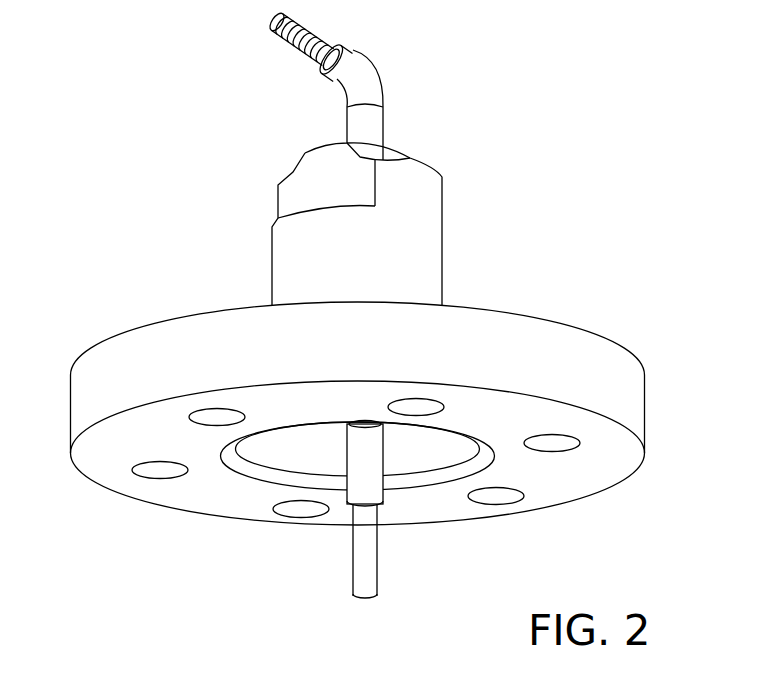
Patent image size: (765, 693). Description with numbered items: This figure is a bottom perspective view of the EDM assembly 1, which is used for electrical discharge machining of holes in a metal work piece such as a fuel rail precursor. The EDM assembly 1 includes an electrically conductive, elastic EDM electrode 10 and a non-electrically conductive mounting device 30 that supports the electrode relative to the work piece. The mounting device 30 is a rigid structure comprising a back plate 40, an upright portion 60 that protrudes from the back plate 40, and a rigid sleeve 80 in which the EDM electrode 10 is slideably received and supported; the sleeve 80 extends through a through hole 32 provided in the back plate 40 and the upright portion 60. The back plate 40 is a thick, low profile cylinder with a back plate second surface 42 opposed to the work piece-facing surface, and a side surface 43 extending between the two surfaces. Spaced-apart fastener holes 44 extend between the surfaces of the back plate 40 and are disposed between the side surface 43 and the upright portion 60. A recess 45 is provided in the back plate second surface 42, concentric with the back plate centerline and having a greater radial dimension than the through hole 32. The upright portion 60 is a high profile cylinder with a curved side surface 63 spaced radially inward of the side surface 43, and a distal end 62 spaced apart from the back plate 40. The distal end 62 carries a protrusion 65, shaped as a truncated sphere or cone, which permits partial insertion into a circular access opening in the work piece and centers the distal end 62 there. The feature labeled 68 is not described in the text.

The EDM assembly 1 is at (78, 101).
The EDM electrode 10 is at (300, 50).
The sleeve 80 is at (372, 84).
The protrusion 65 is at (387, 144).
The distal end 62 is at (444, 166).
The housing notch 68 is at (298, 189).
The upright portion 60 is at (428, 255).
The curved side surface 63 is at (374, 213).
The mounting device 30 is at (574, 291).
The side surface 43 is at (138, 337).
The back plate 40 is at (639, 397).
The back plate second surface 42 is at (605, 483).
The fastener holes 44 is at (160, 474).
The recess 45 is at (434, 470).
The through hole 32 is at (347, 426).